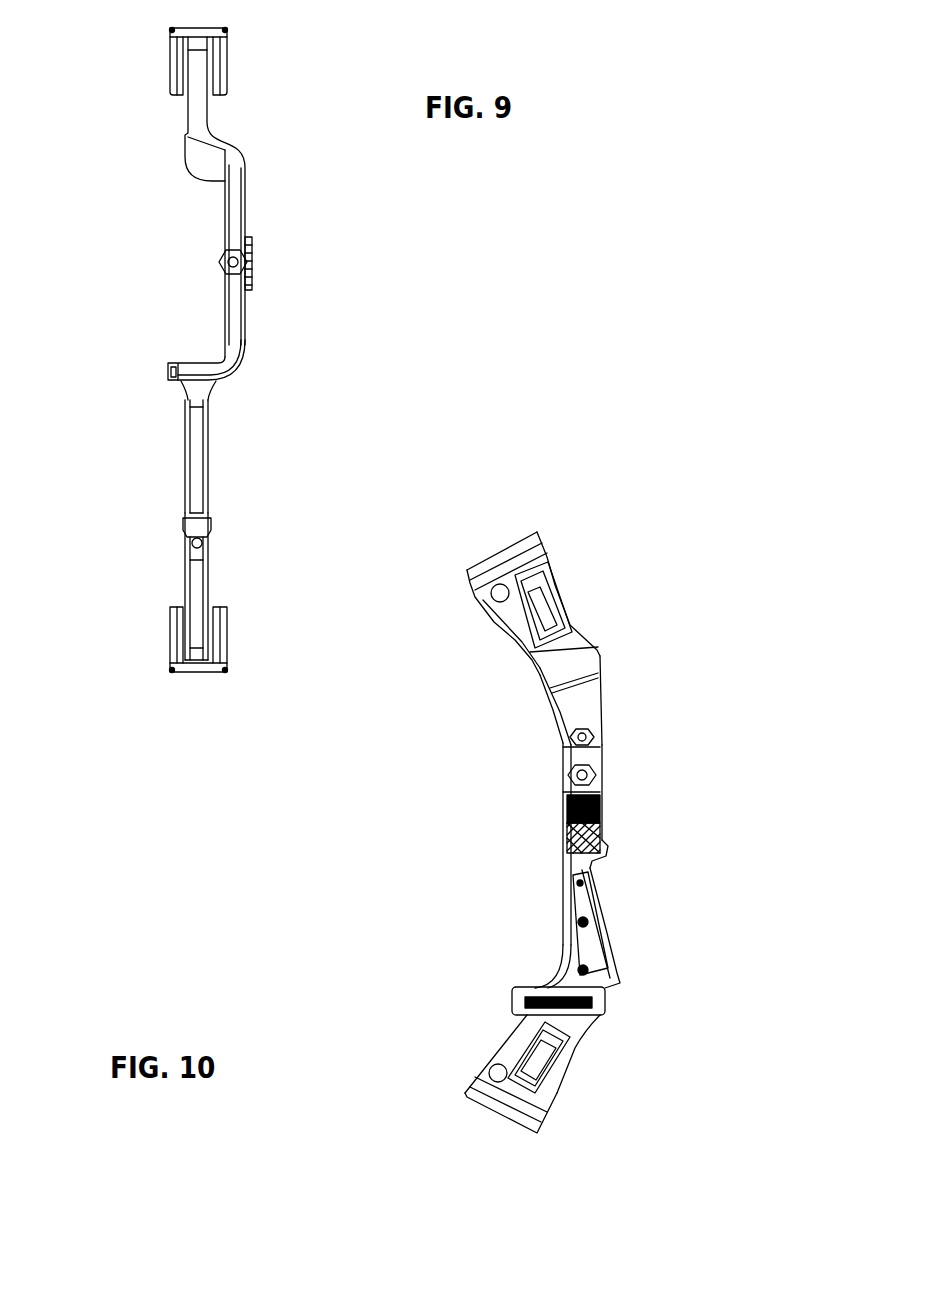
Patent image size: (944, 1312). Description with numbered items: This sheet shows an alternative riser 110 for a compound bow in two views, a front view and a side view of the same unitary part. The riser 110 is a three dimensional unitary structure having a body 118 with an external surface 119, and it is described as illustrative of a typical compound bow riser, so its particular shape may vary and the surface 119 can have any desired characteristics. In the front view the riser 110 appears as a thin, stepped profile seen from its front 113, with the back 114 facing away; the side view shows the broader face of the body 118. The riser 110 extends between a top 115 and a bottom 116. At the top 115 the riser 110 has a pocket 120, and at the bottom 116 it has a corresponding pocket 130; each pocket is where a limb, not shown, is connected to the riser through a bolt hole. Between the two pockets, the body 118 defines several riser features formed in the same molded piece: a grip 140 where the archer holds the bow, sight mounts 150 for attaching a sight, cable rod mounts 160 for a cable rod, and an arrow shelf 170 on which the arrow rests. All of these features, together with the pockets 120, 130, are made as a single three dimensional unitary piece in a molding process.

In FIG. 9, the alternative riser 110 is at (342, 283).
In FIG. 10, the alternative riser 110 is at (664, 783).
In FIG. 9, the front 113 is at (223, 232).
In FIG. 9, the back 114 is at (247, 203).
In FIG. 9, the top 115 is at (218, 55).
In FIG. 10, the top 115 is at (527, 537).
In FIG. 9, the bottom 116 is at (177, 642).
In FIG. 10, the bottom 116 is at (467, 1094).
In FIG. 9, the body 118 is at (191, 446).
In FIG. 10, the body 118 is at (588, 695).
In FIG. 9, the external surface 119 is at (200, 467).
In FIG. 10, the external surface 119 is at (603, 702).
In FIG. 9, the pocket 120 is at (192, 28).
In FIG. 10, the pocket 120 is at (491, 558).
In FIG. 9, the pocket 130 is at (205, 673).
In FIG. 10, the pocket 130 is at (537, 1133).
In FIG. 9, the grip 140 is at (208, 442).
In FIG. 10, the grip 140 is at (608, 933).
In FIG. 10, the sight mounts 150 is at (563, 747).
In FIG. 10, the cable rod mounts 160 is at (563, 833).
In FIG. 9, the arrow shelf 170 is at (190, 362).